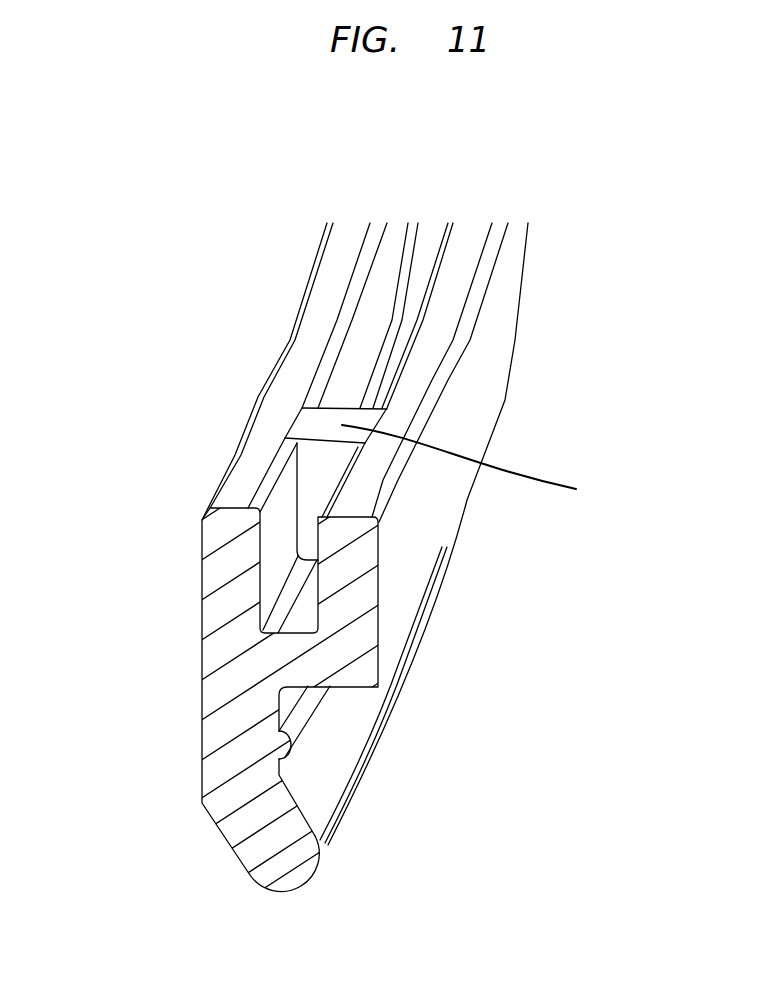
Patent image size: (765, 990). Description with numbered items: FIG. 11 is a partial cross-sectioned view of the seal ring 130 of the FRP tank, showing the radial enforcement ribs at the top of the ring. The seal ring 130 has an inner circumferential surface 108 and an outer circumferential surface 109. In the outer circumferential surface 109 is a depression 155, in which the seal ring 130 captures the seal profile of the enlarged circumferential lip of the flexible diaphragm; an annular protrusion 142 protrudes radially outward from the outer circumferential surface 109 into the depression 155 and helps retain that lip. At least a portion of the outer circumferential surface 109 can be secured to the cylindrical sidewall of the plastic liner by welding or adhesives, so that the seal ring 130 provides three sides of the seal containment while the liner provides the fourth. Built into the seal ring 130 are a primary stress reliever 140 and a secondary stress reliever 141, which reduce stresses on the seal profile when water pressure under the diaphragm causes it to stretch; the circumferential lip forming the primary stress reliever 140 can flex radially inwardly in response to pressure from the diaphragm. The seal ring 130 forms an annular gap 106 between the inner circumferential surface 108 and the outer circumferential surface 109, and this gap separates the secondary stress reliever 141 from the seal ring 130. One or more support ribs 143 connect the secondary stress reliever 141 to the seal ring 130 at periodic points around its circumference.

The annular gap 106 is at (312, 486).
The inner circumferential surface 108 is at (196, 599).
The outer circumferential surface 109 is at (490, 386).
The seal ring 130 is at (365, 488).
The primary stress reliever 140 is at (294, 889).
The secondary stress reliever 141 is at (228, 493).
The annular protrusion 142 is at (285, 752).
The support ribs 143 is at (490, 465).
The depression 155 is at (345, 728).